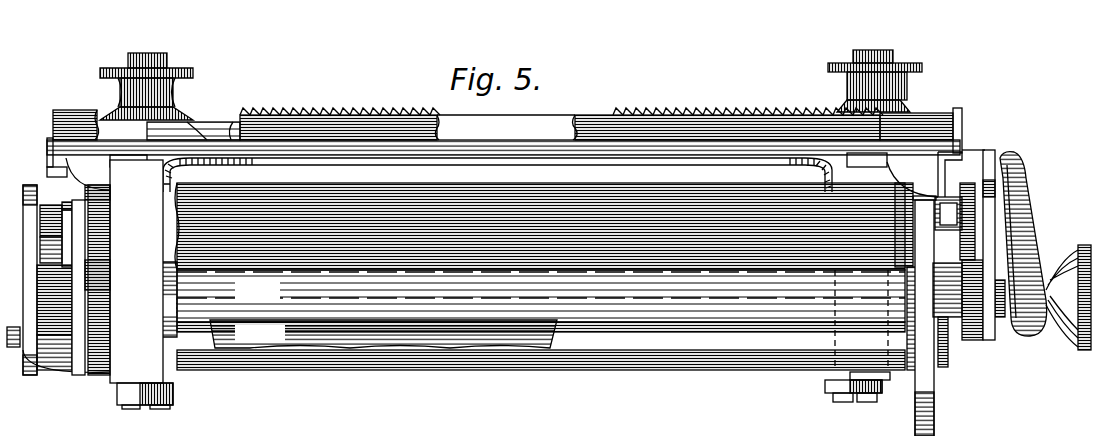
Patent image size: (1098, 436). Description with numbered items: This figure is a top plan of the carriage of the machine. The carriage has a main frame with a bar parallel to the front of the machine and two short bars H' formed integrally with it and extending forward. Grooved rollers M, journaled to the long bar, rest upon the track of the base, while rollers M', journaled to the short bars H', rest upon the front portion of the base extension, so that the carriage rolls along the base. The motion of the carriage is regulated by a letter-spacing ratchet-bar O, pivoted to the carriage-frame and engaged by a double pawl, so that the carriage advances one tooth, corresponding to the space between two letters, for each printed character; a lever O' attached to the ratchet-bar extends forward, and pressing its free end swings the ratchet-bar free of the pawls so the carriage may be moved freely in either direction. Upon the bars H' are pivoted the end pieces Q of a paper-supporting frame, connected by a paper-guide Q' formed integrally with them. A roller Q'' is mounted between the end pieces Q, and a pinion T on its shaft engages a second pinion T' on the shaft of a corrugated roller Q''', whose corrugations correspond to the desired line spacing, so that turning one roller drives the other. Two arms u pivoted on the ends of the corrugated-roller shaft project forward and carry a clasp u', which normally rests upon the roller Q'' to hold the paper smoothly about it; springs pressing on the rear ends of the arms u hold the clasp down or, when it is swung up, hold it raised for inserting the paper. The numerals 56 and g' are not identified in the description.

The grooved rollers M is at (526, 83).
The letter-spacing ratchet-bar O is at (504, 152).
The corrugated roller Q''' is at (540, 264).
The roller Q'' is at (541, 319).
The paper-guide Q' is at (88, 299).
The clasp u' is at (383, 334).
The rollers M' is at (503, 393).
The short bars H' is at (510, 298).
The arms u is at (533, 290).
The bracket arm 56 is at (66, 200).
The gear g' is at (530, 221).
The end pieces Q is at (528, 298).
The second pinion T' is at (978, 232).
The pinion T is at (972, 316).
The lever O' is at (1045, 267).